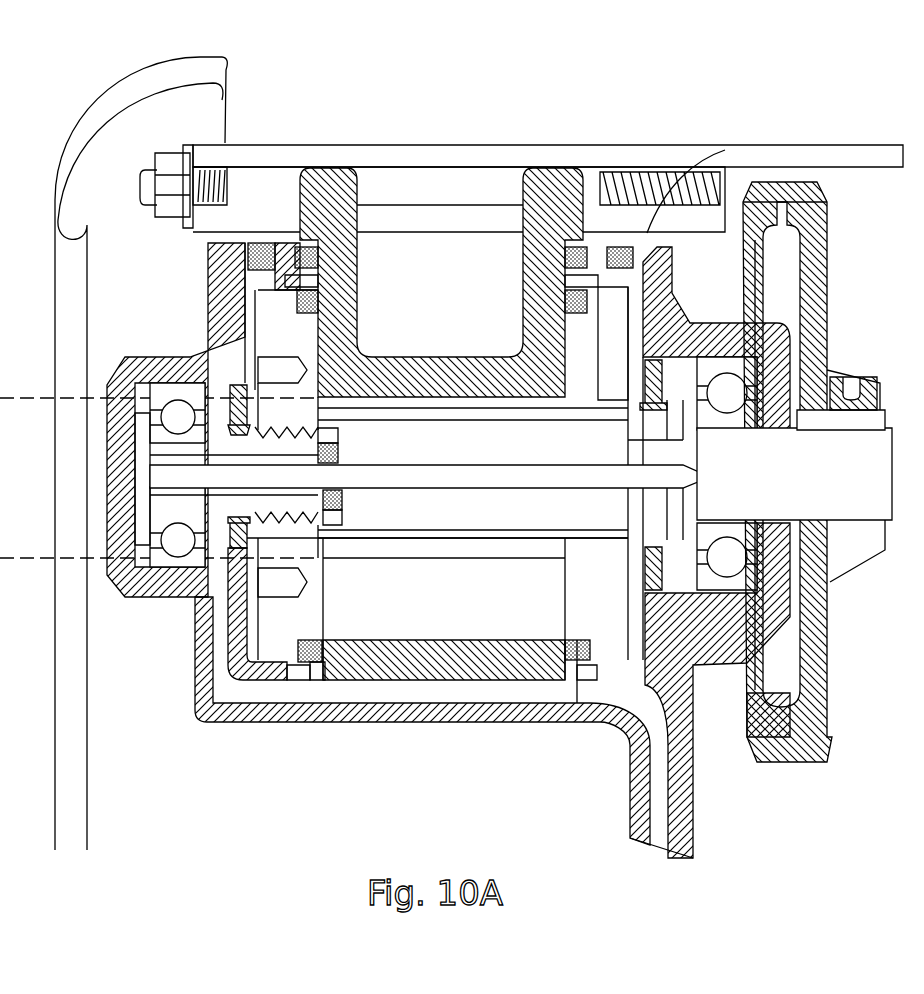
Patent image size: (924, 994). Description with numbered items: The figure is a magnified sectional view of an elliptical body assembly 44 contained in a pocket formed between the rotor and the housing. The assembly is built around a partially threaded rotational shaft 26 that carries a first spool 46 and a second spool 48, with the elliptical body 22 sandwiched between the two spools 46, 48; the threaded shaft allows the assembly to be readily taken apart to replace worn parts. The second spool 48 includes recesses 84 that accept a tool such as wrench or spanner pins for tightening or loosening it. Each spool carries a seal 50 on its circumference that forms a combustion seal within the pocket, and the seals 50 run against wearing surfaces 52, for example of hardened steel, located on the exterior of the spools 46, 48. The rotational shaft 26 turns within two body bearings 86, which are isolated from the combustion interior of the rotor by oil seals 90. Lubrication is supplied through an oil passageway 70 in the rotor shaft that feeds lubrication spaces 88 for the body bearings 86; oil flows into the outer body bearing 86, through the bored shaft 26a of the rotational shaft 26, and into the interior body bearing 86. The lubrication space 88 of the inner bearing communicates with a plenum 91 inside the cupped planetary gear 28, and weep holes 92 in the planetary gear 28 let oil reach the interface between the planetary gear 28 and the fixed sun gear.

The elliptical body 22 is at (407, 433).
The rotational shaft 26 is at (245, 632).
The bored shaft 26a is at (465, 473).
The planetary gear 28 is at (810, 737).
The elliptical body assembly 44 is at (252, 308).
The first spool 46 is at (584, 624).
The second spool 48 is at (263, 592).
The seal 50 is at (312, 316).
The wearing surface 52 is at (293, 283).
The oil passageway 70 is at (655, 833).
The recesses 84 is at (275, 365).
The body bearings 86 is at (175, 398).
The lubrication spaces 88 is at (60, 338).
The oil seals 90 is at (247, 432).
The plenum 91 is at (790, 300).
The weep holes 92 is at (755, 756).